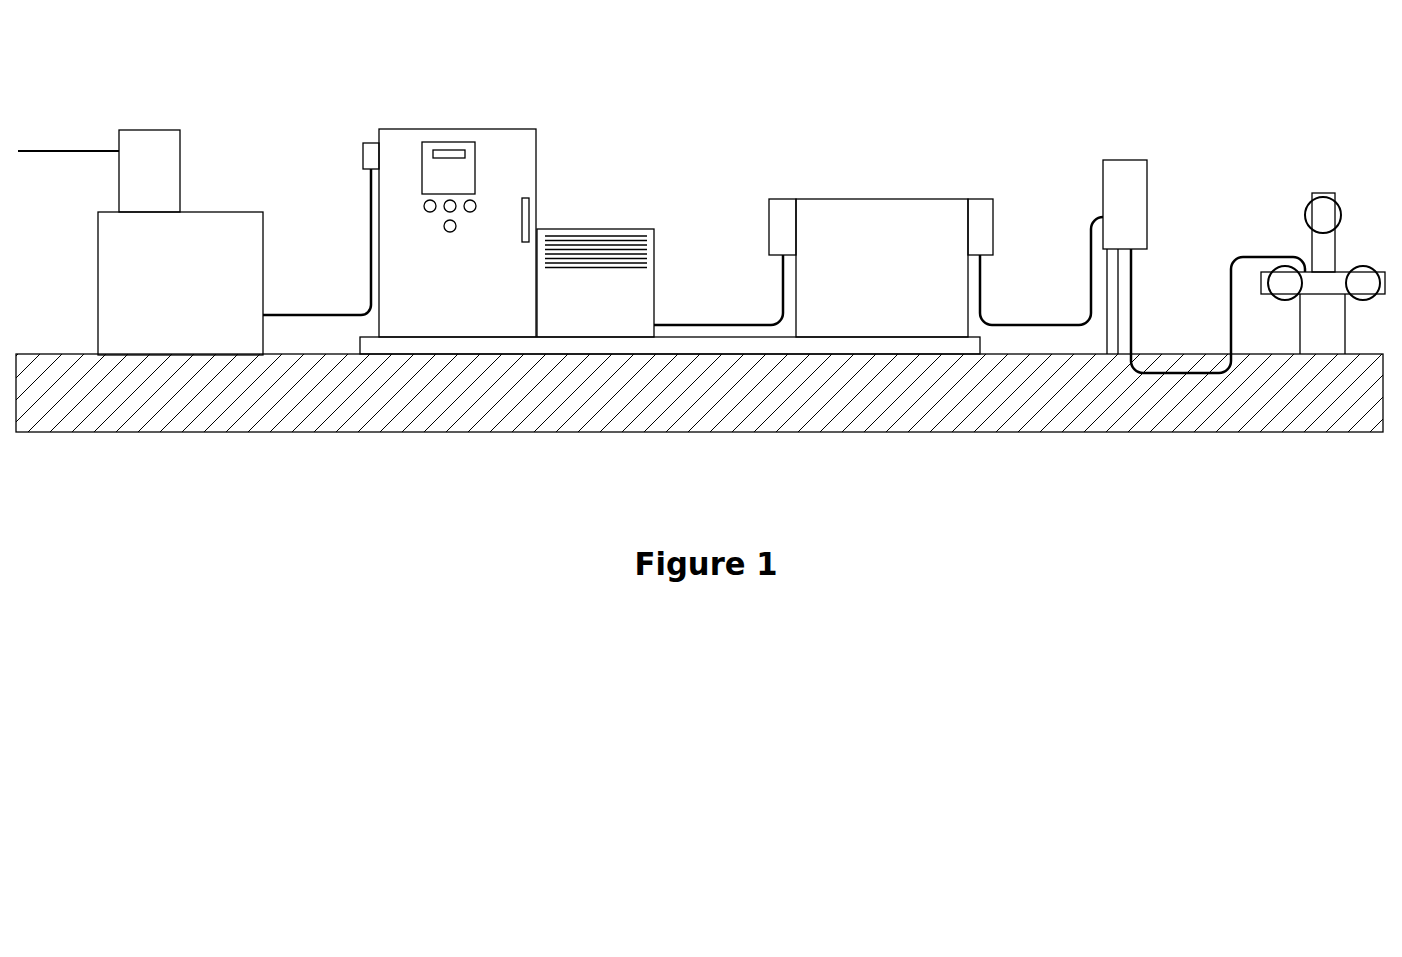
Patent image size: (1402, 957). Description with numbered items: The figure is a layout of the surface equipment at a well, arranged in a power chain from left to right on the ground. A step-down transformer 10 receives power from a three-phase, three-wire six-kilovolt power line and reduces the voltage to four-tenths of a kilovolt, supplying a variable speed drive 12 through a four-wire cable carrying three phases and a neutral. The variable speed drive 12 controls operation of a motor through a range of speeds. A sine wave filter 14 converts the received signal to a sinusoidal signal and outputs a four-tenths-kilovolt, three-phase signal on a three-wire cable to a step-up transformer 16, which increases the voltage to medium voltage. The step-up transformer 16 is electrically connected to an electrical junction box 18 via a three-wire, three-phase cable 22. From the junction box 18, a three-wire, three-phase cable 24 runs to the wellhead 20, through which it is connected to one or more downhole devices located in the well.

The step-down transformer 10 is at (115, 272).
The variable speed drive 12 is at (398, 137).
The sine wave filter 14 is at (630, 228).
The step-up transformer 16 is at (843, 208).
The junction box 18 is at (1112, 177).
The wellhead 20 is at (1318, 208).
The three wire cable 22 is at (1087, 323).
The cable 24 is at (1232, 343).